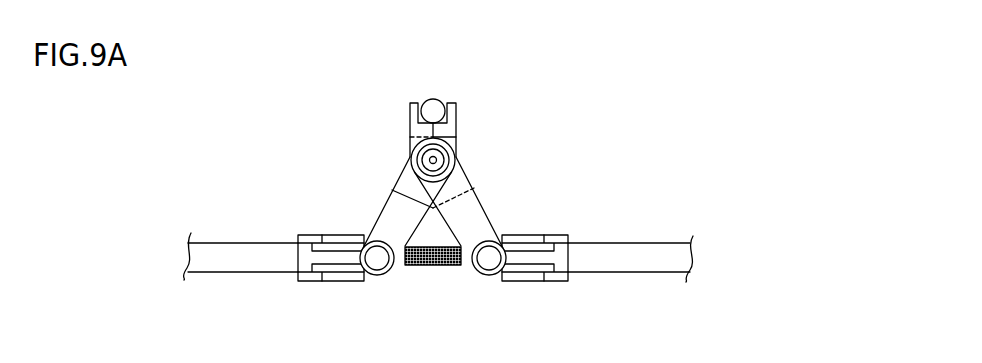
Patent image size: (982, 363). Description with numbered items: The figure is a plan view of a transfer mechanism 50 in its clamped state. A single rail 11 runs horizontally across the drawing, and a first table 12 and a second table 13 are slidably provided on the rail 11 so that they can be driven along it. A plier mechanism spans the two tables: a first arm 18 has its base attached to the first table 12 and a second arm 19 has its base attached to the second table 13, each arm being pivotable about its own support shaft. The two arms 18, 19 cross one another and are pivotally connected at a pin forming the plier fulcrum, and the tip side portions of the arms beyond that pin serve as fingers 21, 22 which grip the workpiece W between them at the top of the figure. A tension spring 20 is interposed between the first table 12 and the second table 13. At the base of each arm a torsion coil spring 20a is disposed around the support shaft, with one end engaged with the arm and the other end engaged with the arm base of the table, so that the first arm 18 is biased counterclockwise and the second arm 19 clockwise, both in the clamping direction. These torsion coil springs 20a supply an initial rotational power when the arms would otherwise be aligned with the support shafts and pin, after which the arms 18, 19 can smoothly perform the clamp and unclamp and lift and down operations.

The rail 11 is at (630, 262).
The first table 12 is at (337, 286).
The second table 13 is at (530, 287).
The first arm 18 is at (384, 214).
The second arm 19 is at (492, 226).
The tension spring 20 is at (447, 266).
The torsion coil spring 20a is at (371, 240).
The finger 21 is at (450, 118).
The finger 22 is at (410, 118).
The transfer mechanism 50 is at (573, 158).
The workpiece W is at (437, 104).